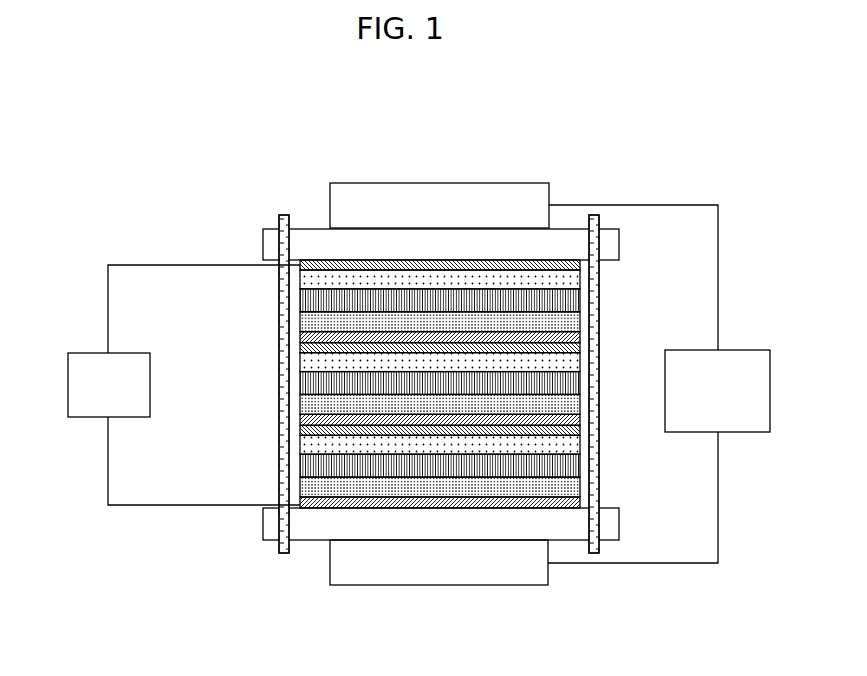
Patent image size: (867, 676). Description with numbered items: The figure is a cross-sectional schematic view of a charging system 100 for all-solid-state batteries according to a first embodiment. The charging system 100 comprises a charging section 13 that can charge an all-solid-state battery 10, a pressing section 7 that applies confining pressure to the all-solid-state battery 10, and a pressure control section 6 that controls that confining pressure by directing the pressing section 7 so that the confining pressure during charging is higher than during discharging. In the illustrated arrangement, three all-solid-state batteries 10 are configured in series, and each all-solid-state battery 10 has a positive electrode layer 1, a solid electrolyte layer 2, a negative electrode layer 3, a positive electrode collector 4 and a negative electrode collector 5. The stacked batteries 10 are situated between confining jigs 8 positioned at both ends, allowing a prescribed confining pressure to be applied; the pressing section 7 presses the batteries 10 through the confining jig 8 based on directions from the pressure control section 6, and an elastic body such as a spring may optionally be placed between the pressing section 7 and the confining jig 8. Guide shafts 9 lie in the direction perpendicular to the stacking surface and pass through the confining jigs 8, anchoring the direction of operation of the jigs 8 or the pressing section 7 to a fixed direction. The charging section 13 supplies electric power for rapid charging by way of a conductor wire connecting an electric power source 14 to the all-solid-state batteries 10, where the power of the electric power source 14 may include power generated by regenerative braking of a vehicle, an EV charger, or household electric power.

The charging system 100 is at (640, 136).
The positive electrode layer 1 is at (300, 364).
The solid electrolyte layer 2 is at (300, 382).
The negative electrode layer 3 is at (300, 403).
The positive electrode collector 4 is at (300, 343).
The negative electrode collector 5 is at (300, 419).
The pressure control section 6 is at (743, 338).
The pressing section 7 is at (467, 183).
The confining jig 8 is at (305, 229).
The guide shaft 9 is at (281, 215).
The all-solid-state battery 10 is at (412, 384).
The charging section 13 is at (150, 265).
The electric power source 14 is at (82, 353).